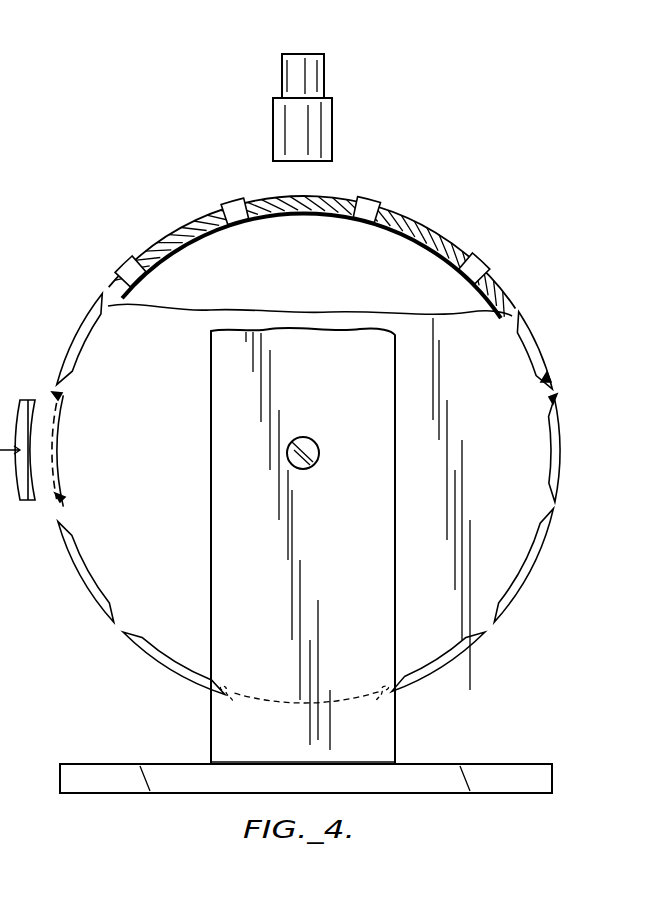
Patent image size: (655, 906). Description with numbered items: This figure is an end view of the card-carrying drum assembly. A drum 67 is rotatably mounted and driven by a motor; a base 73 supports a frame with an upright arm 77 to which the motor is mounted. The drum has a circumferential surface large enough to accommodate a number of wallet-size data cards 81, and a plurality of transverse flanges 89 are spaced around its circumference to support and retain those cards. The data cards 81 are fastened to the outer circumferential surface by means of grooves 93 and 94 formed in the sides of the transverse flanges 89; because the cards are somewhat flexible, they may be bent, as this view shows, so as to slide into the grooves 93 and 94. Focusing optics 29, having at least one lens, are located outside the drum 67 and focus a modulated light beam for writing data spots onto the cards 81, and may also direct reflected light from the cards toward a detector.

The focusing optics 29 is at (316, 130).
The drum 67 is at (536, 603).
The base 73 is at (490, 775).
The upright arm 77 is at (372, 565).
The data cards 81 is at (423, 233).
The transverse flanges 89 is at (375, 203).
The groove 93 is at (560, 410).
The groove 94 is at (547, 347).